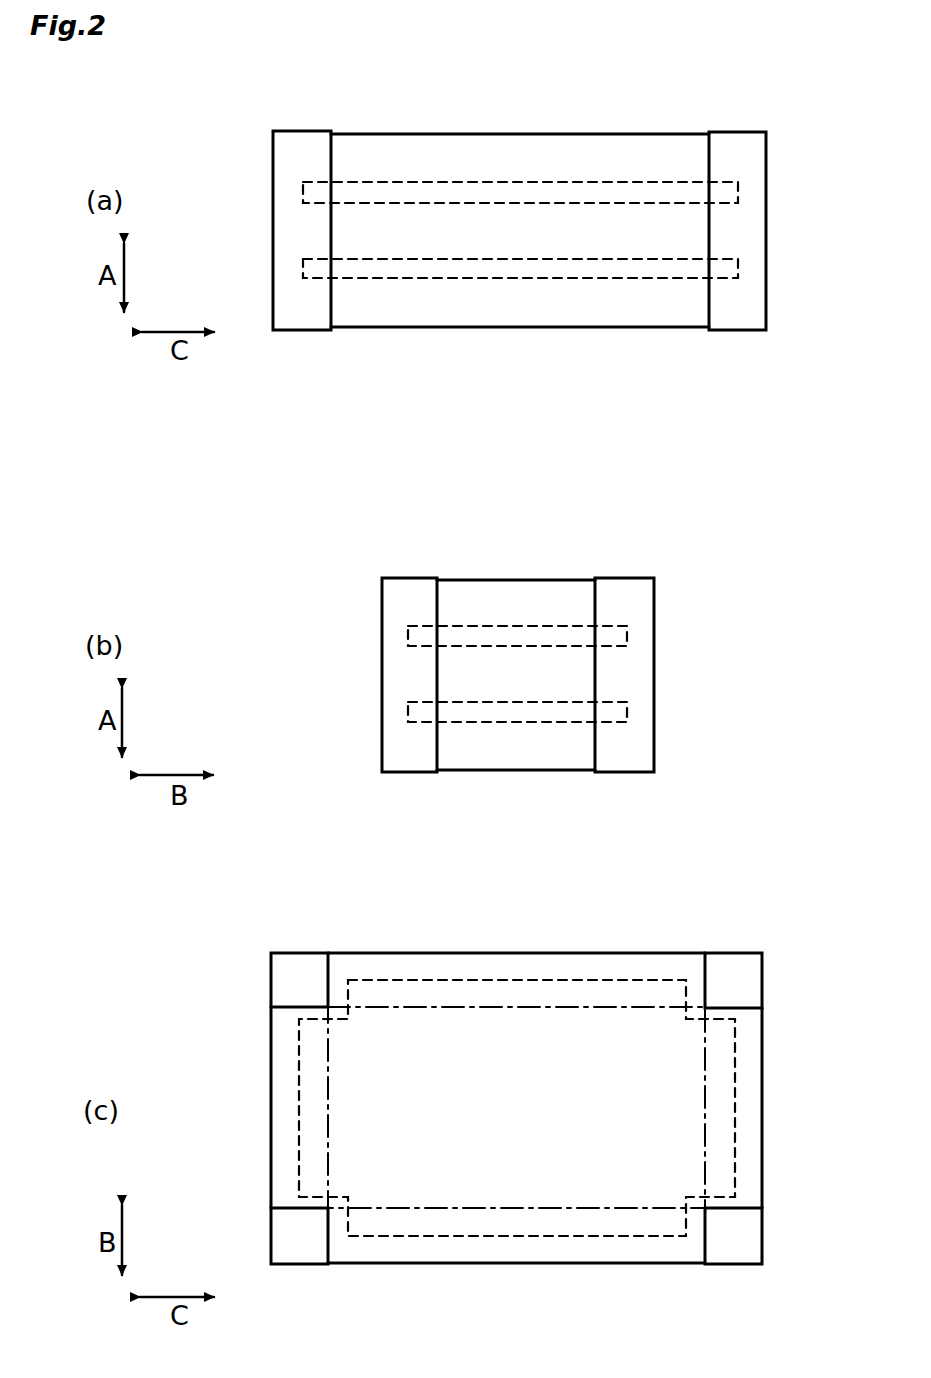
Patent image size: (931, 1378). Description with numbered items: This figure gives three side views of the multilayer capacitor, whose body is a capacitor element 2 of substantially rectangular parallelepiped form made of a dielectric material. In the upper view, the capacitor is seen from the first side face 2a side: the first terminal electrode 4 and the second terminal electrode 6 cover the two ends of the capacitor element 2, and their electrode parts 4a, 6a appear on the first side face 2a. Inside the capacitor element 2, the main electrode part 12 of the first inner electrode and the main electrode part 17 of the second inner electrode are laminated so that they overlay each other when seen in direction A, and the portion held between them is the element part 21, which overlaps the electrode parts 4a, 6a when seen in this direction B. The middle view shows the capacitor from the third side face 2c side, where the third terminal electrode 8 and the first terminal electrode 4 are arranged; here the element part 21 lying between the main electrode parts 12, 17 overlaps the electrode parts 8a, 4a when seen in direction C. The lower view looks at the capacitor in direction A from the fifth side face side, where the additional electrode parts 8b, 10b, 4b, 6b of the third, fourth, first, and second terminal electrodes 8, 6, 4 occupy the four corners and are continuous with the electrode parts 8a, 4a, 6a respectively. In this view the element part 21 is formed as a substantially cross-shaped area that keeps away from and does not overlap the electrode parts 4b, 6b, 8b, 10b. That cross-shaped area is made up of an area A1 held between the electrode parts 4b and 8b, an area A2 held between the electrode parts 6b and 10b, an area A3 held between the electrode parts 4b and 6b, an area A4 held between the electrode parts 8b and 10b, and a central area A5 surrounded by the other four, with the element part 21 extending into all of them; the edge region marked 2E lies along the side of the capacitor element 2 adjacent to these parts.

The capacitor element 2 is at (570, 128).
The first side face 2a is at (645, 150).
The third side face 2c is at (570, 595).
The end region of body 2E is at (740, 1112).
The first terminal electrode 4 is at (310, 126).
The electrode part 4a is at (297, 305).
The additional electrode part 4b is at (297, 1250).
The second terminal electrode 6 is at (752, 127).
The electrode part 6a is at (753, 265).
The additional electrode part 6b is at (735, 1250).
The third terminal electrode 8 is at (397, 570).
The electrode part 8a is at (390, 628).
The additional electrode part 8b is at (300, 968).
The additional electrode part 10b is at (730, 968).
The main electrode part 12 is at (427, 270).
The main electrode part 17 is at (437, 193).
The element part 21 is at (525, 232).
The area A1 is at (288, 1090).
The area A2 is at (740, 1160).
The area A3 is at (615, 1247).
The area A4 is at (427, 975).
The area A5 is at (550, 1040).